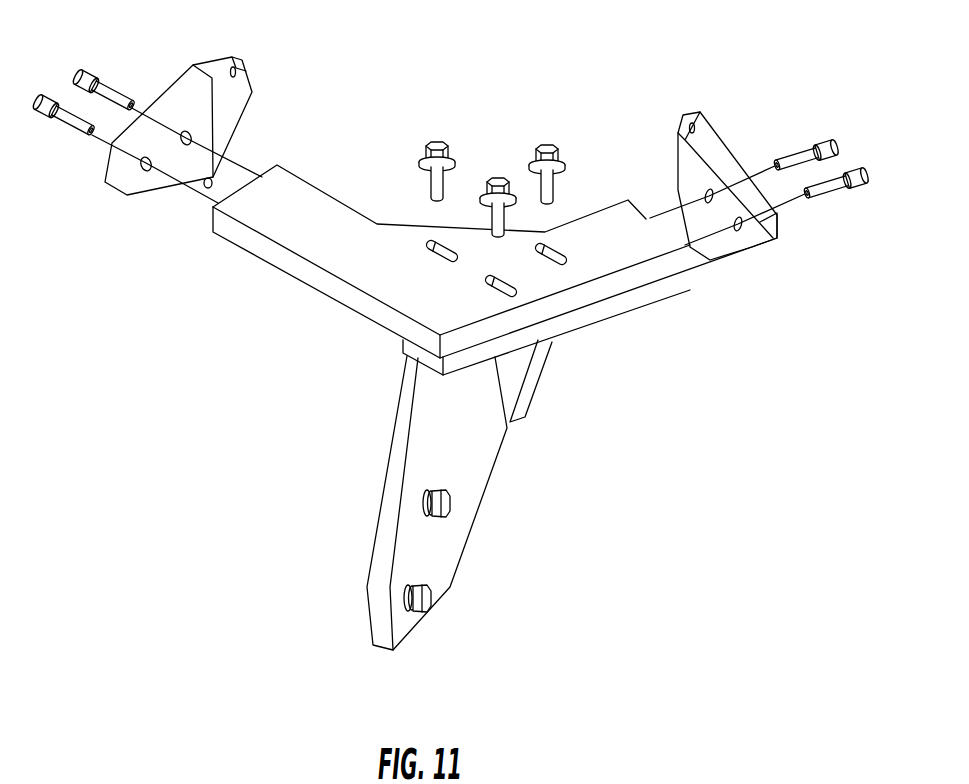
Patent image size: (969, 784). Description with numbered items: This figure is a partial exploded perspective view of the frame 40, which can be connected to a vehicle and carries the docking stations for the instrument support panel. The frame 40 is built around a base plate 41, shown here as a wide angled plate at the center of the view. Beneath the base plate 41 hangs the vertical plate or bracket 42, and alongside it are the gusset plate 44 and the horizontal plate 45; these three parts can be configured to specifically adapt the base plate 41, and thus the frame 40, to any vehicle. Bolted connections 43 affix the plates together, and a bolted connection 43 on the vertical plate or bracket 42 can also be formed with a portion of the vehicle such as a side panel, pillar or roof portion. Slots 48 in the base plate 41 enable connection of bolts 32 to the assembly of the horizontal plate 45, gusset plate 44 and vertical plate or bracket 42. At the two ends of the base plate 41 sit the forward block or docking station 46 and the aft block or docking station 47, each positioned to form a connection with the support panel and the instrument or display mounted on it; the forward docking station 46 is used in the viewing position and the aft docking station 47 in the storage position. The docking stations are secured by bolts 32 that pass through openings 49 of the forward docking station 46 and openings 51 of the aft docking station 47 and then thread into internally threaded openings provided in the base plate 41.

The bolts 32 is at (46, 101).
The frame 40 is at (326, 420).
The base plate 41 is at (394, 304).
The vertical plate or bracket 42 is at (455, 535).
The bolted connections 43 is at (446, 502).
The gusset plate 44 is at (541, 358).
The horizontal plate 45 is at (485, 346).
The forward block or docking station 46 is at (246, 62).
The aft block or docking station 47 is at (693, 114).
The slots 48 is at (428, 249).
The openings 49 is at (191, 138).
The openings 51 is at (738, 230).